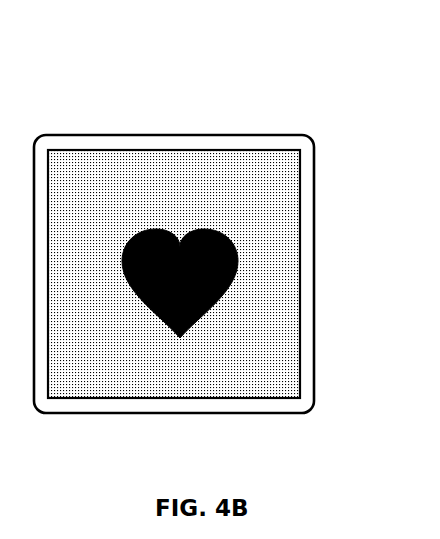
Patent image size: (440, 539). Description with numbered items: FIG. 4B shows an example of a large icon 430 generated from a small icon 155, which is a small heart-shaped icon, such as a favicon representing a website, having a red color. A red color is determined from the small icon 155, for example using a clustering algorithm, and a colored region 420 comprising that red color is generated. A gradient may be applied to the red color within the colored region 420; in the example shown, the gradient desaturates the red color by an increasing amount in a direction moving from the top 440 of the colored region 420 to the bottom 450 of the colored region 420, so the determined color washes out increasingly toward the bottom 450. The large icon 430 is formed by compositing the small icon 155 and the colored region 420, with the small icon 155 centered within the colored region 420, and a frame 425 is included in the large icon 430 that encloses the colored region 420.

The large icon 430 is at (218, 253).
The frame 425 is at (286, 130).
The colored region 420 is at (281, 202).
The top of the colored region 440 is at (146, 147).
The bottom of the colored region 450 is at (164, 400).
The small icon 155 is at (254, 257).